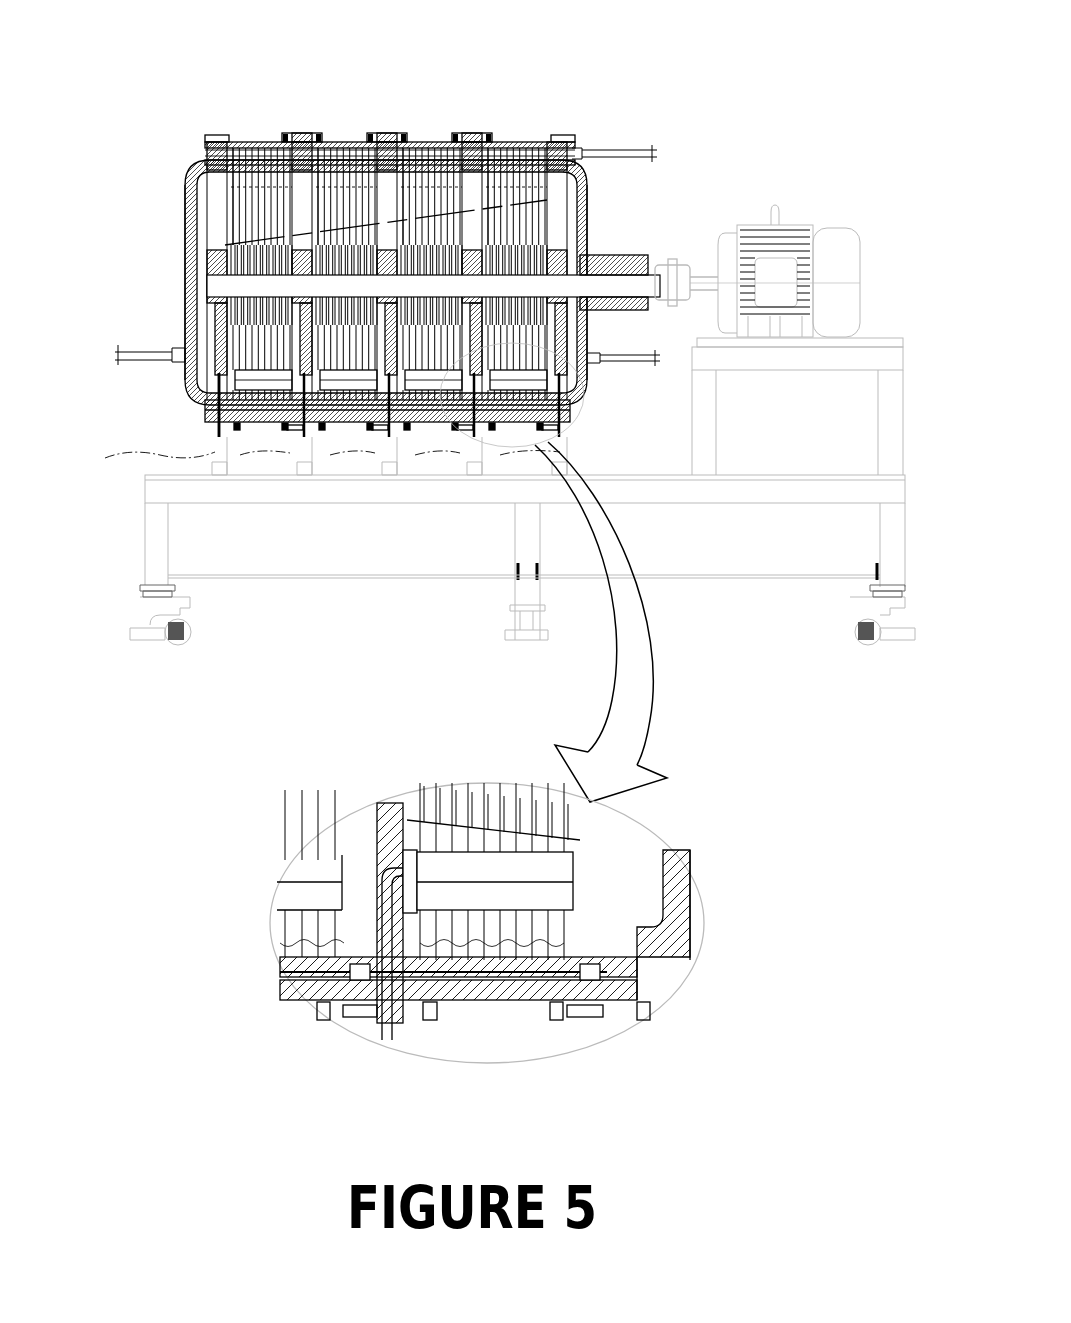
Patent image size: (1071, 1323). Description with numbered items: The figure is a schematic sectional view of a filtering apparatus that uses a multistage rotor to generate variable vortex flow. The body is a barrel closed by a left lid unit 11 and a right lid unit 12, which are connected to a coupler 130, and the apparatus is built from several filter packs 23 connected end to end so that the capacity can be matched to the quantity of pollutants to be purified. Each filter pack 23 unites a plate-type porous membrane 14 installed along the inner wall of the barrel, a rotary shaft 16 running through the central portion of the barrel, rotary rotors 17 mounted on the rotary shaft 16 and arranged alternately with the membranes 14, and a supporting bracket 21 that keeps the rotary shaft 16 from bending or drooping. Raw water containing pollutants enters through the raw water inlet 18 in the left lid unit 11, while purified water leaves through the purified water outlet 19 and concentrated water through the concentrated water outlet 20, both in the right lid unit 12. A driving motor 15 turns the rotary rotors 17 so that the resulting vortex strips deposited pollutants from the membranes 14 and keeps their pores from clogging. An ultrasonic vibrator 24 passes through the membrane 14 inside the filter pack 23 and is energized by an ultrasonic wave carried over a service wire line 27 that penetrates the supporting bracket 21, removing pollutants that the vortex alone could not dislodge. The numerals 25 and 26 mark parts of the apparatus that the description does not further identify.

The left lid unit 11 is at (190, 382).
The right lid unit 12 is at (585, 183).
The membrane 14 is at (230, 192).
The driving motor 15 is at (837, 237).
The rotary shaft 16 is at (220, 323).
The rotary rotor 17 is at (190, 225).
The raw water inlet 18 is at (140, 355).
The purified water outlet 19 is at (610, 150).
The concentrated water outlet 20 is at (632, 362).
The supporting bracket 21 is at (387, 470).
The filter pack 23 is at (259, 140).
The ultrasonic vibrator 24 is at (518, 387).
The ground connection 25 is at (312, 462).
The frame 26 is at (148, 493).
The service wire line 27 is at (220, 440).
The coupler 130 is at (300, 137).